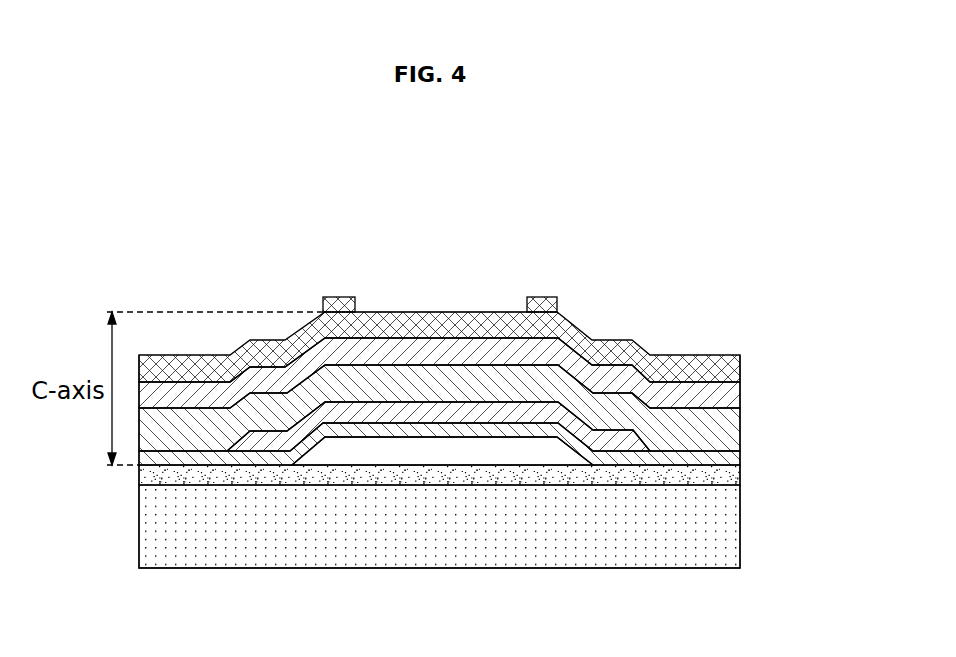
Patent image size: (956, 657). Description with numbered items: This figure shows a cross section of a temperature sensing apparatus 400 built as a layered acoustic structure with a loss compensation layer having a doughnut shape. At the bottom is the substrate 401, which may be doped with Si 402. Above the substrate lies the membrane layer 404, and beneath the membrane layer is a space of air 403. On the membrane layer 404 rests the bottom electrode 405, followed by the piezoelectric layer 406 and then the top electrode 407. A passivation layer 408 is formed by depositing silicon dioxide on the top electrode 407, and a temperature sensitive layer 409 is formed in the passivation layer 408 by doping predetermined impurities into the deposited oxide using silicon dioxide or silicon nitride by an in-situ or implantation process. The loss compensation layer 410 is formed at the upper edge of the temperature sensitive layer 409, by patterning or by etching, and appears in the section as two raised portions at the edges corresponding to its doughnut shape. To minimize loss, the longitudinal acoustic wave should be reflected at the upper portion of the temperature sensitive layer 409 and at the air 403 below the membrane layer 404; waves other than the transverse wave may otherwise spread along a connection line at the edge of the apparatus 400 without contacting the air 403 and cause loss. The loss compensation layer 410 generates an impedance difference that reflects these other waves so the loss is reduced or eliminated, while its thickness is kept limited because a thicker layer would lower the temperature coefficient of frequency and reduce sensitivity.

The temperature sensing apparatus 400 is at (598, 209).
The substrate 401 is at (748, 467).
The Si 402 is at (535, 552).
The air 403 is at (363, 455).
The membrane layer 404 is at (742, 455).
The bottom electrode 405 is at (623, 442).
The piezoelectric layer 406 is at (742, 425).
The top electrode 407 is at (742, 393).
The passivation layer 408 is at (742, 362).
The temperature sensitive layer 409 is at (563, 325).
The loss compensation layer 410 is at (323, 297).